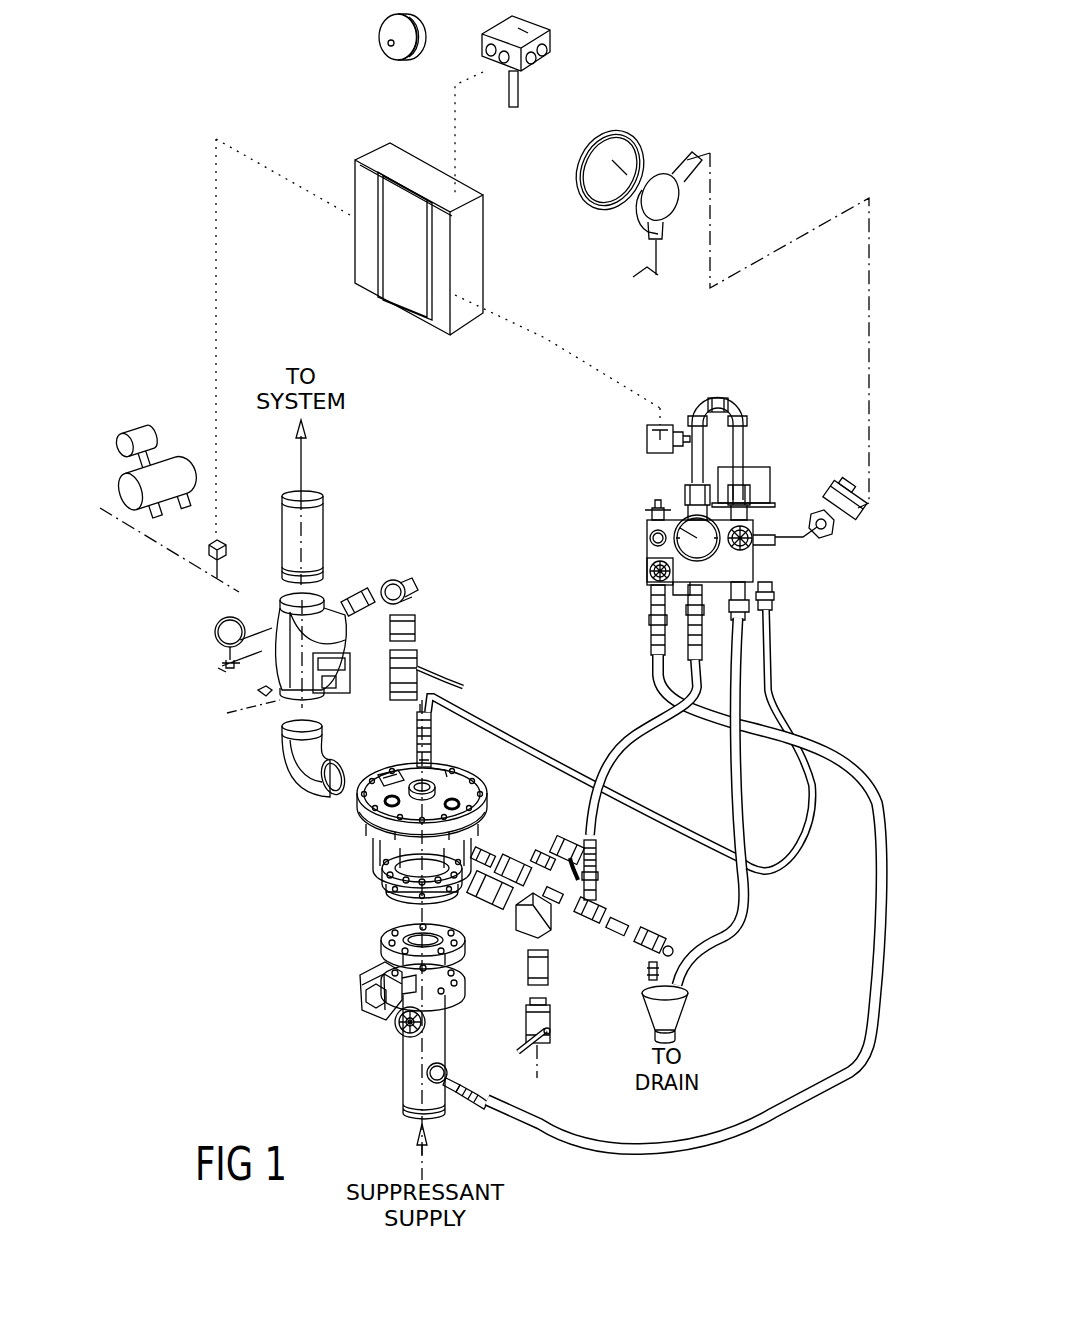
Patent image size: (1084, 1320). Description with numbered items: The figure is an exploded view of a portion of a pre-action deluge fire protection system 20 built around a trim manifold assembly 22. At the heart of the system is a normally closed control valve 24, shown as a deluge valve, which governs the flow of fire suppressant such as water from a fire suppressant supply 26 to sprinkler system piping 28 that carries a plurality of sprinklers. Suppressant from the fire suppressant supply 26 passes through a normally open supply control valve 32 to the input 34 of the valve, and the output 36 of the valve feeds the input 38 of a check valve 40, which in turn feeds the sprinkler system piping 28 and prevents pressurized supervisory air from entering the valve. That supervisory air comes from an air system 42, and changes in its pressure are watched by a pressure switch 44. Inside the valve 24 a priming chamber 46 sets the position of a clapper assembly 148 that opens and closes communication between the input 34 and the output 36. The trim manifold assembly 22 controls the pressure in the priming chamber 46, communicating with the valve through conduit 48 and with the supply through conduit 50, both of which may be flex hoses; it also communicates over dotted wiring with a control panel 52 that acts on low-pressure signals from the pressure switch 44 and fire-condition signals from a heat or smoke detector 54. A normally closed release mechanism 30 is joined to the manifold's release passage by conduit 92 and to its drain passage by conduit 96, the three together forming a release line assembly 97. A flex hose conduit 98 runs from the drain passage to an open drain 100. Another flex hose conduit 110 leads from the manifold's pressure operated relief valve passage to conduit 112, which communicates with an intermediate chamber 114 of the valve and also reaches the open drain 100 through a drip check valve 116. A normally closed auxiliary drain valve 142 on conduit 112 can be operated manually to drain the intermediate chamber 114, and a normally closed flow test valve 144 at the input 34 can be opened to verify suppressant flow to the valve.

The fire protection system 20 is at (197, 160).
The trim manifold assembly 22 is at (631, 556).
The control valve 24 is at (372, 828).
The fire suppressant supply 26 is at (413, 1065).
The sprinkler system piping 28 is at (323, 545).
The release mechanism 30 is at (634, 437).
The supply control valve 32 is at (375, 1010).
The input 34 is at (381, 893).
The output 36 is at (344, 814).
The input 38 is at (264, 712).
The check valve 40 is at (280, 673).
The air system 42 is at (184, 424).
The pressure switch 44 is at (225, 543).
The priming chamber 46 is at (443, 768).
The conduit 48 is at (783, 692).
The conduit 50 is at (840, 753).
The control panel 52 is at (413, 292).
The detector 54 is at (540, 64).
The conduit 92 is at (688, 497).
The conduit 96 is at (740, 440).
The release line assembly 97 is at (755, 401).
The conduit 98 is at (725, 940).
The open drain 100 is at (673, 1017).
The conduit 110 is at (647, 732).
The conduit 112 is at (520, 857).
The intermediate chamber 114 is at (492, 847).
The drip check valve 116 is at (642, 936).
The auxiliary drain valve 142 is at (583, 837).
The flow test valve 144 is at (553, 1013).
The clapper assembly 148 is at (390, 763).